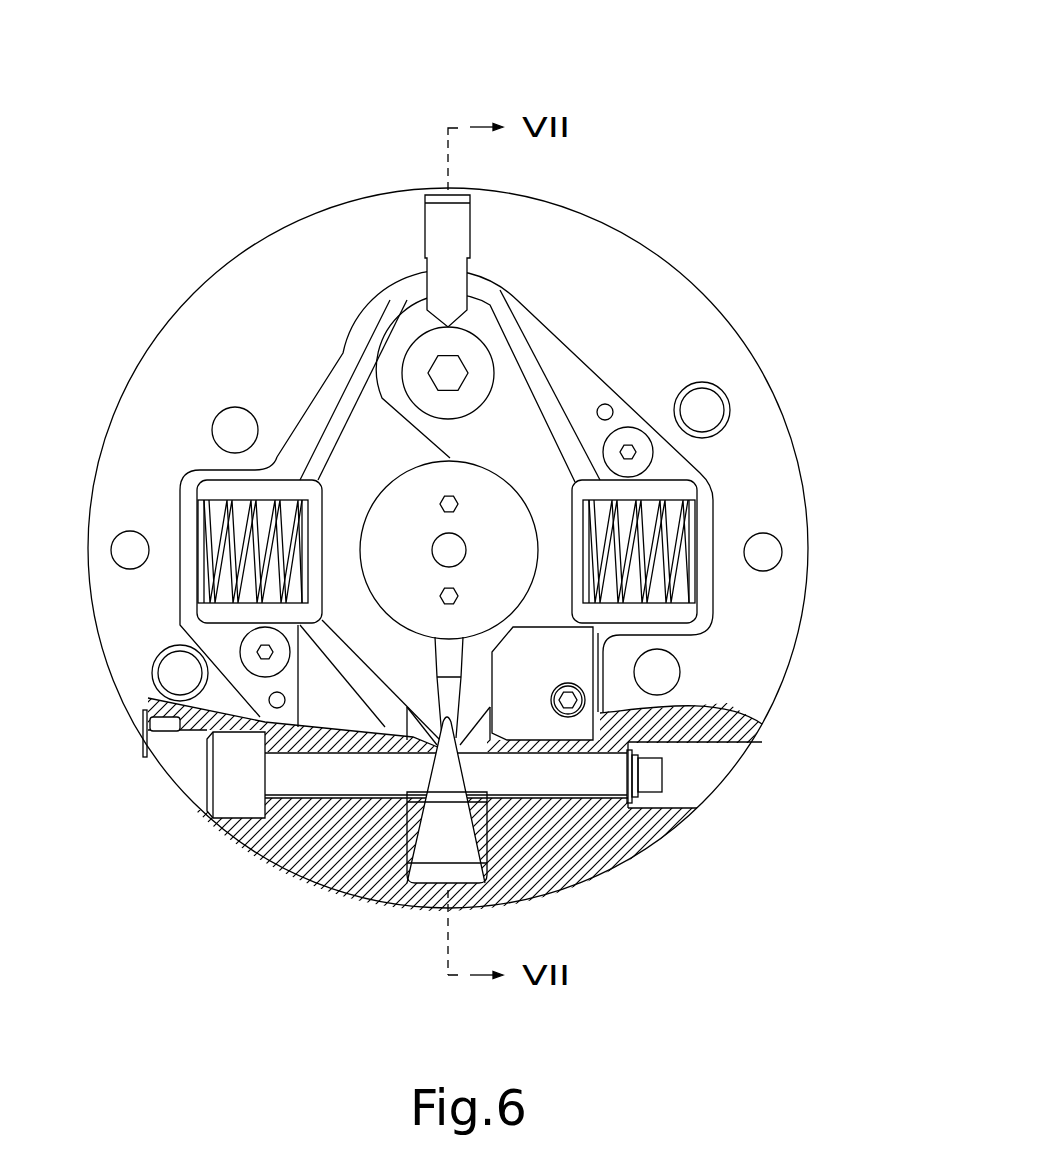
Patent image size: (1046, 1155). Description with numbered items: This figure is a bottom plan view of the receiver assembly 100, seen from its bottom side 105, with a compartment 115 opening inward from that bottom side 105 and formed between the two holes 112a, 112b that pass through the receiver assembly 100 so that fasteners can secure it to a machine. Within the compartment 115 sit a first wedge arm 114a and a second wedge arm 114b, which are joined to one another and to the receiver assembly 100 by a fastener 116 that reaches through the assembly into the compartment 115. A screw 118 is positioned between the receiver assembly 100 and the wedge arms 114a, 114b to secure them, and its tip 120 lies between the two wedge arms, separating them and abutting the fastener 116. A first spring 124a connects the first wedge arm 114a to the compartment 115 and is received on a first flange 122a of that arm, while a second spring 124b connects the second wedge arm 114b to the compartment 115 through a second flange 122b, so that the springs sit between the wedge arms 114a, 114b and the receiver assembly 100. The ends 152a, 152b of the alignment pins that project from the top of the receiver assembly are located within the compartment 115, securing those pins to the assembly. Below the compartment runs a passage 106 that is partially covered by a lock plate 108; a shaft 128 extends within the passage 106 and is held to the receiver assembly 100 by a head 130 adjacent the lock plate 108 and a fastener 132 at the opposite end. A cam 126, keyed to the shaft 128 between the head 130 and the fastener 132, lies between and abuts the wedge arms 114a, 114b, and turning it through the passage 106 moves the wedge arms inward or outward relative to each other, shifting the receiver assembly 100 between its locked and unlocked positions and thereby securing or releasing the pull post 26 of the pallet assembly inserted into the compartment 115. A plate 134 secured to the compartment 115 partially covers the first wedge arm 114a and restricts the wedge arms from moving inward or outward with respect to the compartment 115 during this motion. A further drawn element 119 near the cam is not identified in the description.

The receiver assembly 100 is at (652, 126).
The bottom side 105 is at (618, 262).
The passage 106 is at (187, 768).
The lock plate 108 is at (142, 762).
The hole 112a is at (176, 678).
The hole 112b is at (715, 392).
The first wedge arm 114a is at (521, 431).
The second wedge arm 114b is at (362, 462).
The compartment 115 is at (665, 463).
The fastener 116 is at (470, 360).
The screw 118 is at (452, 243).
The conical member 119 is at (469, 882).
The tip 120 is at (438, 324).
The first flange 122a is at (690, 552).
The second flange 122b is at (210, 554).
The first spring 124a is at (690, 522).
The second spring 124b is at (200, 512).
The cam 126 is at (428, 853).
The shaft 128 is at (357, 770).
The head 130 is at (232, 805).
The fastener 132 is at (643, 780).
The plate 134 is at (563, 645).
The end 152a is at (262, 652).
The end 152b is at (630, 450).
The pull post 26 is at (416, 490).